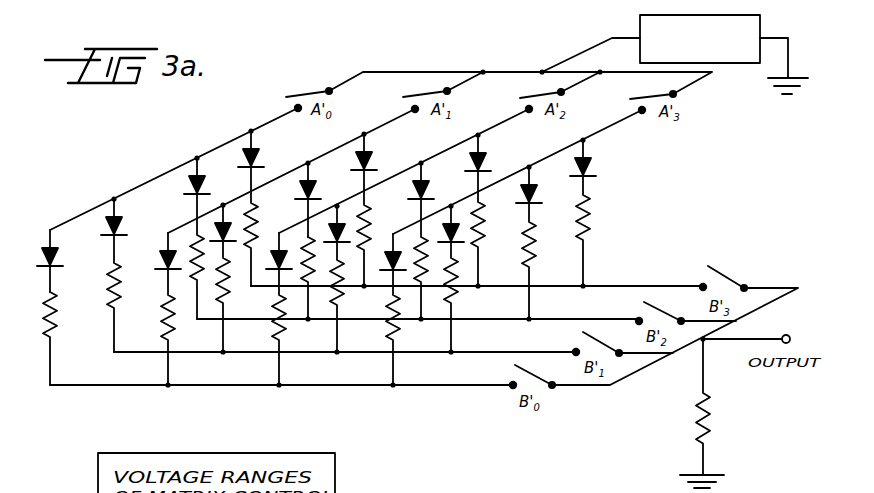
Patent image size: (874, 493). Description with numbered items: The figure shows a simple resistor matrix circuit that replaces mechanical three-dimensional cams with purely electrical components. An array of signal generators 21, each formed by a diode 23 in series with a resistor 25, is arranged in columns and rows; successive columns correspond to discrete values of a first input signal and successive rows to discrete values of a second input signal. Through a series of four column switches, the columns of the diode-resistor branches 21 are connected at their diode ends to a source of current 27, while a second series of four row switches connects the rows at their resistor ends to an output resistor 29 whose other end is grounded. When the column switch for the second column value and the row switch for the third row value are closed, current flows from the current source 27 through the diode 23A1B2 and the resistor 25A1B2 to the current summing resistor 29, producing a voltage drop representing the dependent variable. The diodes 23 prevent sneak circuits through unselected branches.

The signal generators 21 is at (38, 230).
The diode 23 is at (61, 265).
The resistor 25 is at (55, 318).
The diode 23A1B2 is at (300, 192).
The resistor 25A1B2 is at (312, 268).
The source of current 27 is at (640, 22).
The output resistor 29 is at (705, 428).